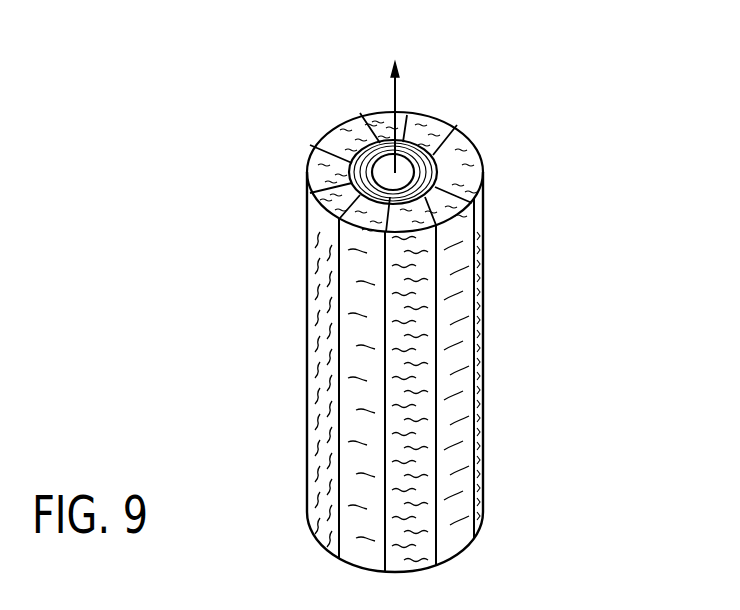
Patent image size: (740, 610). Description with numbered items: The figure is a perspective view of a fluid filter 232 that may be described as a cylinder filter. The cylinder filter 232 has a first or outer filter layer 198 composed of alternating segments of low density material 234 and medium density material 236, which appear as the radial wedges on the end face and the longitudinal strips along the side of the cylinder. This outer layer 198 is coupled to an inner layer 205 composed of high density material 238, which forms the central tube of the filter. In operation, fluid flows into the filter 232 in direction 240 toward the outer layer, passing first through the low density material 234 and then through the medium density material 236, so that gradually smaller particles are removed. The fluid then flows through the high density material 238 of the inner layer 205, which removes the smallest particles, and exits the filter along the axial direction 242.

The outer filter layer 198 is at (470, 117).
The low density material 234 is at (322, 165).
The high density material 238 is at (440, 157).
The inner layer 205 is at (456, 173).
The axial direction 242 is at (397, 103).
The medium density material 236 is at (412, 345).
The fluid filter 232 is at (220, 307).
The direction 240 is at (259, 380).